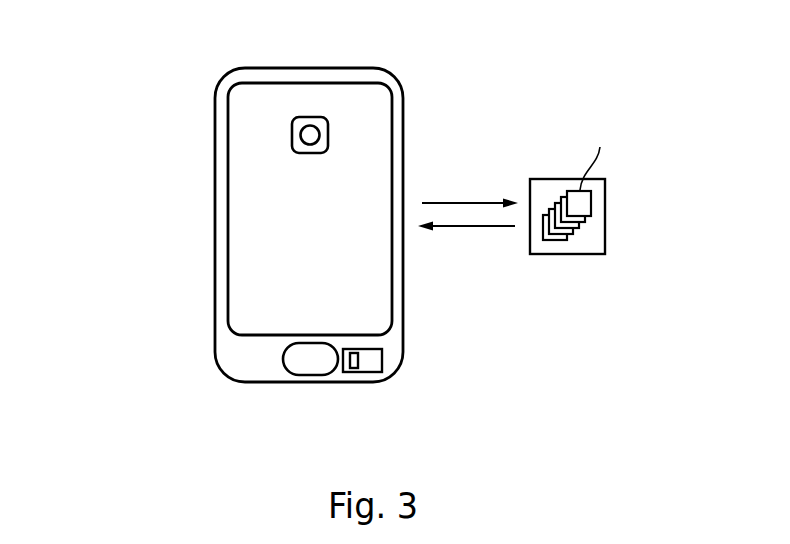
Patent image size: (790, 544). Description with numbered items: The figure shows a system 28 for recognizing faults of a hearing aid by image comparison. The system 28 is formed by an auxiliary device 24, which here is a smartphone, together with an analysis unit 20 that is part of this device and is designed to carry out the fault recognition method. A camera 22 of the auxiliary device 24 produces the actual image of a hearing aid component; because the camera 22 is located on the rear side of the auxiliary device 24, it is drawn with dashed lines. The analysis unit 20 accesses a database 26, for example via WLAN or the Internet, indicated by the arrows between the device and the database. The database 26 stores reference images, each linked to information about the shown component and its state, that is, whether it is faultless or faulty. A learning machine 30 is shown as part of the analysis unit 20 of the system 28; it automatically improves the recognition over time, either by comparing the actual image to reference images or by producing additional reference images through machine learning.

The analysis unit 20 is at (393, 367).
The camera 22 is at (305, 117).
The auxiliary device 24 is at (352, 69).
The database 26 is at (582, 254).
The system 28 is at (136, 108).
The learning machine 30 is at (343, 372).